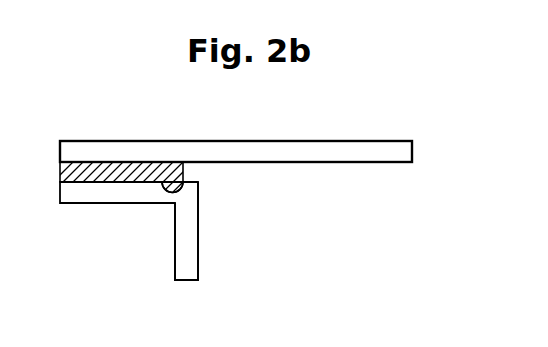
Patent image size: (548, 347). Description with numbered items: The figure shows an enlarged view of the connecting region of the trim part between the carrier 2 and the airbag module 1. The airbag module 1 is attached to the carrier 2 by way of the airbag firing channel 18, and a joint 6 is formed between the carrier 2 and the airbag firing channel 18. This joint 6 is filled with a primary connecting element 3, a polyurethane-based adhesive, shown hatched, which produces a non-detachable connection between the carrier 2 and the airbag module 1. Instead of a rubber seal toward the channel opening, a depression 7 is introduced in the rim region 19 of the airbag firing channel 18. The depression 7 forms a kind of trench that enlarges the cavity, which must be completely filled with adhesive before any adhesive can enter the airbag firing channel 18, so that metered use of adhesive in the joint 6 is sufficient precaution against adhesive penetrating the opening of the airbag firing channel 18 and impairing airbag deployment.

The airbag module 1 is at (226, 251).
The carrier 2 is at (103, 148).
The primary connecting element 3 is at (73, 168).
The joint 6 is at (196, 172).
The depression 7 is at (168, 192).
The airbag firing channel 18 is at (188, 252).
The rim region 19 is at (82, 192).